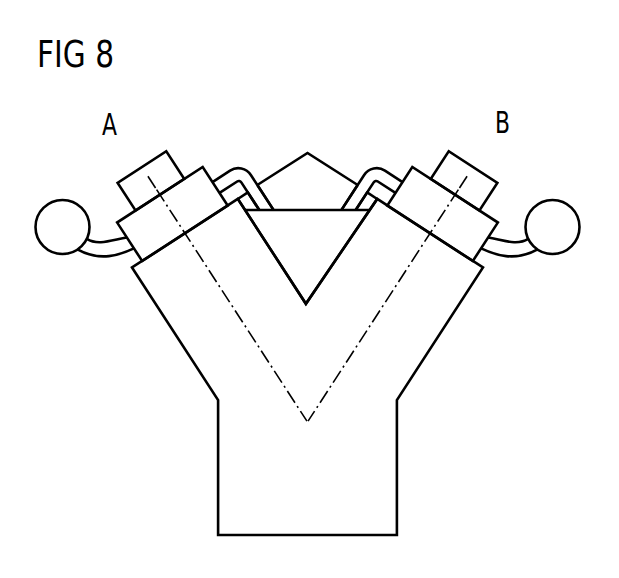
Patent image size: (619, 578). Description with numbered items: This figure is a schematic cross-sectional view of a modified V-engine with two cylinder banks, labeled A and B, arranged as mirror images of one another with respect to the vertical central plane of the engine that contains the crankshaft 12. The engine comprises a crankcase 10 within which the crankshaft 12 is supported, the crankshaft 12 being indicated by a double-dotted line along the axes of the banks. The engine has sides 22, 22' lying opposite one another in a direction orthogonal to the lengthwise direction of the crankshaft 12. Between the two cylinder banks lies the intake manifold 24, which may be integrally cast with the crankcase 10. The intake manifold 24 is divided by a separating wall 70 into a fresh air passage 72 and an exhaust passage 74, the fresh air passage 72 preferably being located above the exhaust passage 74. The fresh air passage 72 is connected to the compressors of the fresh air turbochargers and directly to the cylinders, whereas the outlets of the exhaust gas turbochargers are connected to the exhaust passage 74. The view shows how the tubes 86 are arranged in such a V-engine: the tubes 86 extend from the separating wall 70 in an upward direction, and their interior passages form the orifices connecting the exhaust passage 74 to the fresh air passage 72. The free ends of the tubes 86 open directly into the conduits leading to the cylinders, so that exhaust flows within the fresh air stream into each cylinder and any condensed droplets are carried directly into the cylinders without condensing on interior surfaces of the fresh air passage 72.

The crankcase 10 is at (446, 324).
The crankshaft 12 is at (308, 421).
The side 22 is at (63, 203).
The connector sphere B 22' is at (553, 204).
The intake manifold 24 is at (270, 174).
The separating wall 70 is at (300, 210).
The fresh air passage 72 is at (322, 177).
The exhaust passage 74 is at (290, 253).
The tubes 86 is at (346, 200).